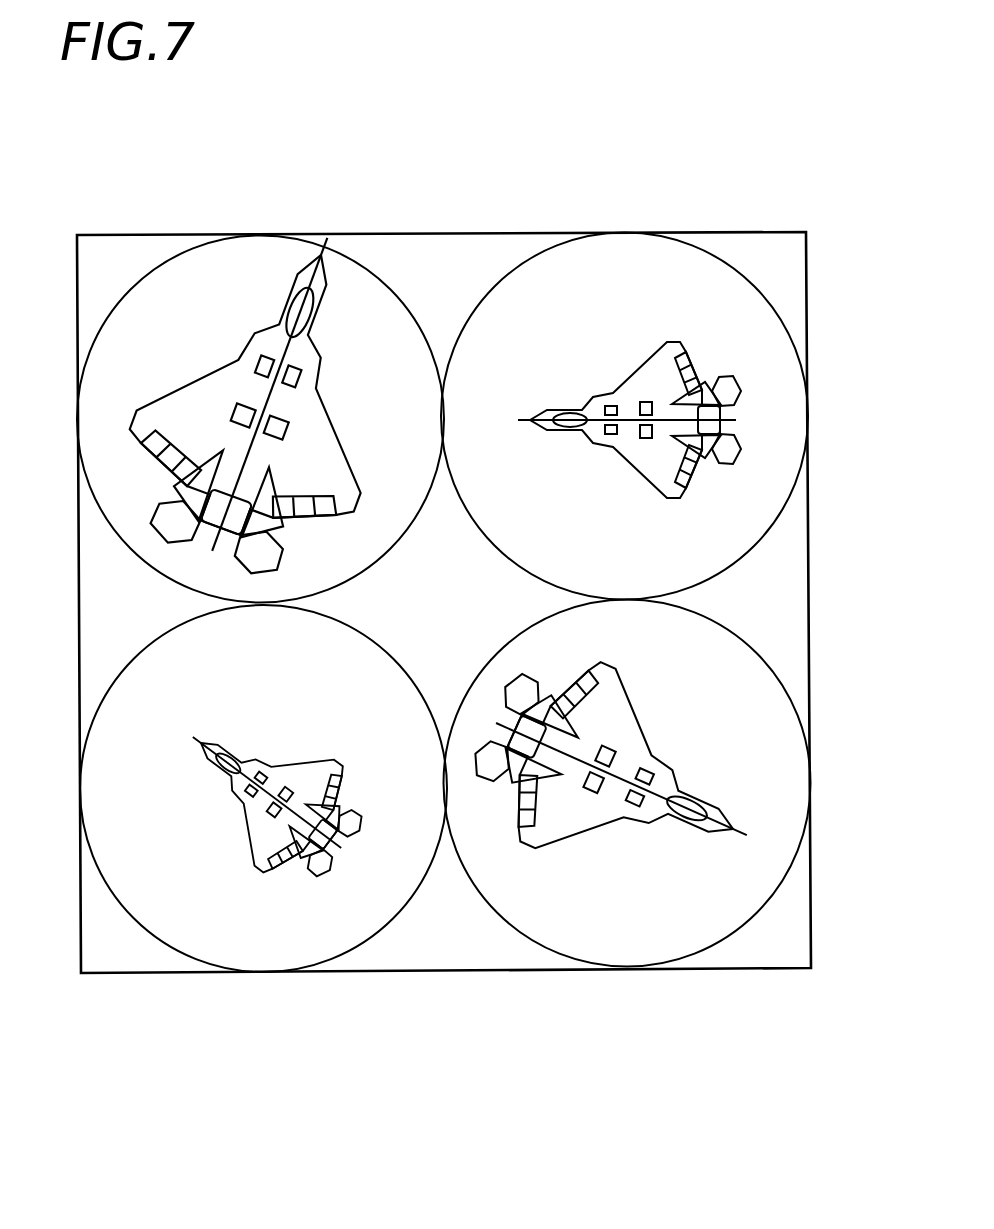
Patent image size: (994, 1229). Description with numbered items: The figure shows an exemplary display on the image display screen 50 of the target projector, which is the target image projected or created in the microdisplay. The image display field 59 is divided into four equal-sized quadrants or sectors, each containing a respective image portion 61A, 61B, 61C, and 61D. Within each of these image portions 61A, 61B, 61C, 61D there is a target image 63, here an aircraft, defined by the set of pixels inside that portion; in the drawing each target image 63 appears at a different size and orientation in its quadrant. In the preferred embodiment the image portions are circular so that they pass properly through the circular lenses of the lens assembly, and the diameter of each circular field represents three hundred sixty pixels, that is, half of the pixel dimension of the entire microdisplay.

The image display screen 50 is at (765, 612).
The image display field 59 is at (444, 258).
The image portion 61A is at (205, 286).
The image portion 61B is at (260, 930).
The image portion 61C is at (625, 268).
The image portion 61D is at (628, 907).
The target image 63 is at (327, 392).